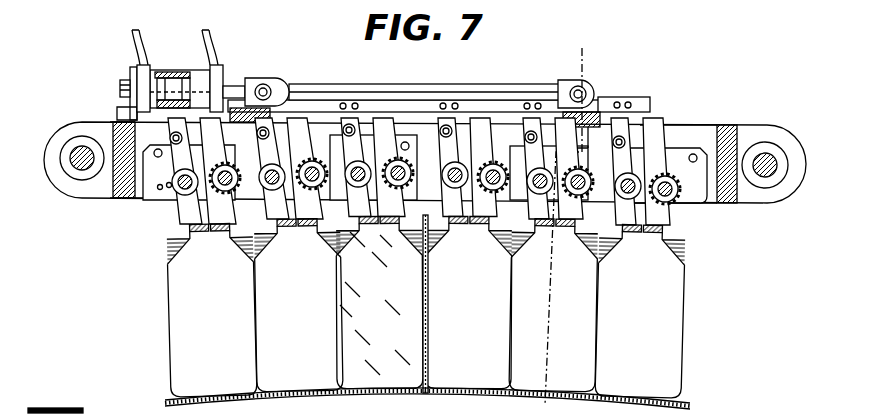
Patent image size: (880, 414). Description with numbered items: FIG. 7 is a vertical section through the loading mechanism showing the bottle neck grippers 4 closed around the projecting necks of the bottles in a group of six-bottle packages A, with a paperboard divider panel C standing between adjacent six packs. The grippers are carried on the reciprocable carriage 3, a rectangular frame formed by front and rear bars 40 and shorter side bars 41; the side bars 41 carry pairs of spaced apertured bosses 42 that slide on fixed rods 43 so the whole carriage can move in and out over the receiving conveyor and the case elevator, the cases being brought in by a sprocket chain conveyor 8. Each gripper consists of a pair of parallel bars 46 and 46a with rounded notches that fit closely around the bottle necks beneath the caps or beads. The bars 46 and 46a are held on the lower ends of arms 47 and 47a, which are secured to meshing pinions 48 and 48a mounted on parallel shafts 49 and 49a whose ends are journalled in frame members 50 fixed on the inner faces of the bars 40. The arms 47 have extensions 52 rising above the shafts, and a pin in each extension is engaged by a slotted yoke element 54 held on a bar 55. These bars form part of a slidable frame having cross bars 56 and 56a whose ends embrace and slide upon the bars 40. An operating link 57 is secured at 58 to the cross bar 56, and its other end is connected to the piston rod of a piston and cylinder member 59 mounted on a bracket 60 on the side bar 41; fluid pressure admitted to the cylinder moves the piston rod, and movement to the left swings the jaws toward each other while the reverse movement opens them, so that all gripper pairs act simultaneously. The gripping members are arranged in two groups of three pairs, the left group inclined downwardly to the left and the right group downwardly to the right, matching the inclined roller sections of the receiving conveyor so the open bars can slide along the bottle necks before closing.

The reciprocable carriage 3 is at (754, 118).
The bottle neck grippers 4 is at (694, 218).
The sprocket chain conveyor 8 is at (556, 57).
The front and rear bars 40 is at (695, 137).
The side bars 41 is at (87, 128).
The apertured bosses 42 is at (90, 192).
The rods 43 is at (82, 170).
The gripper bar 46 is at (190, 233).
The gripper bar 46a is at (228, 235).
The arms 47 is at (187, 213).
The arms 47a is at (235, 213).
The pinion 48 is at (175, 195).
The pinion 48a is at (228, 163).
The shaft 49 is at (170, 173).
The shaft 49a is at (293, 127).
The frame members 50 is at (375, 135).
The extensions 52 is at (187, 158).
The slotted yoke elements 54 is at (500, 112).
The bars 55 is at (612, 98).
The cross bar 56 is at (598, 90).
The cross bar 56a is at (262, 80).
The operating link 57 is at (327, 88).
The link securing point 58 is at (427, 401).
The piston and cylinder member 59 is at (200, 70).
The bracket 60 is at (133, 68).
The six bottle package A is at (683, 343).
The paperboard divider panel C is at (410, 250).